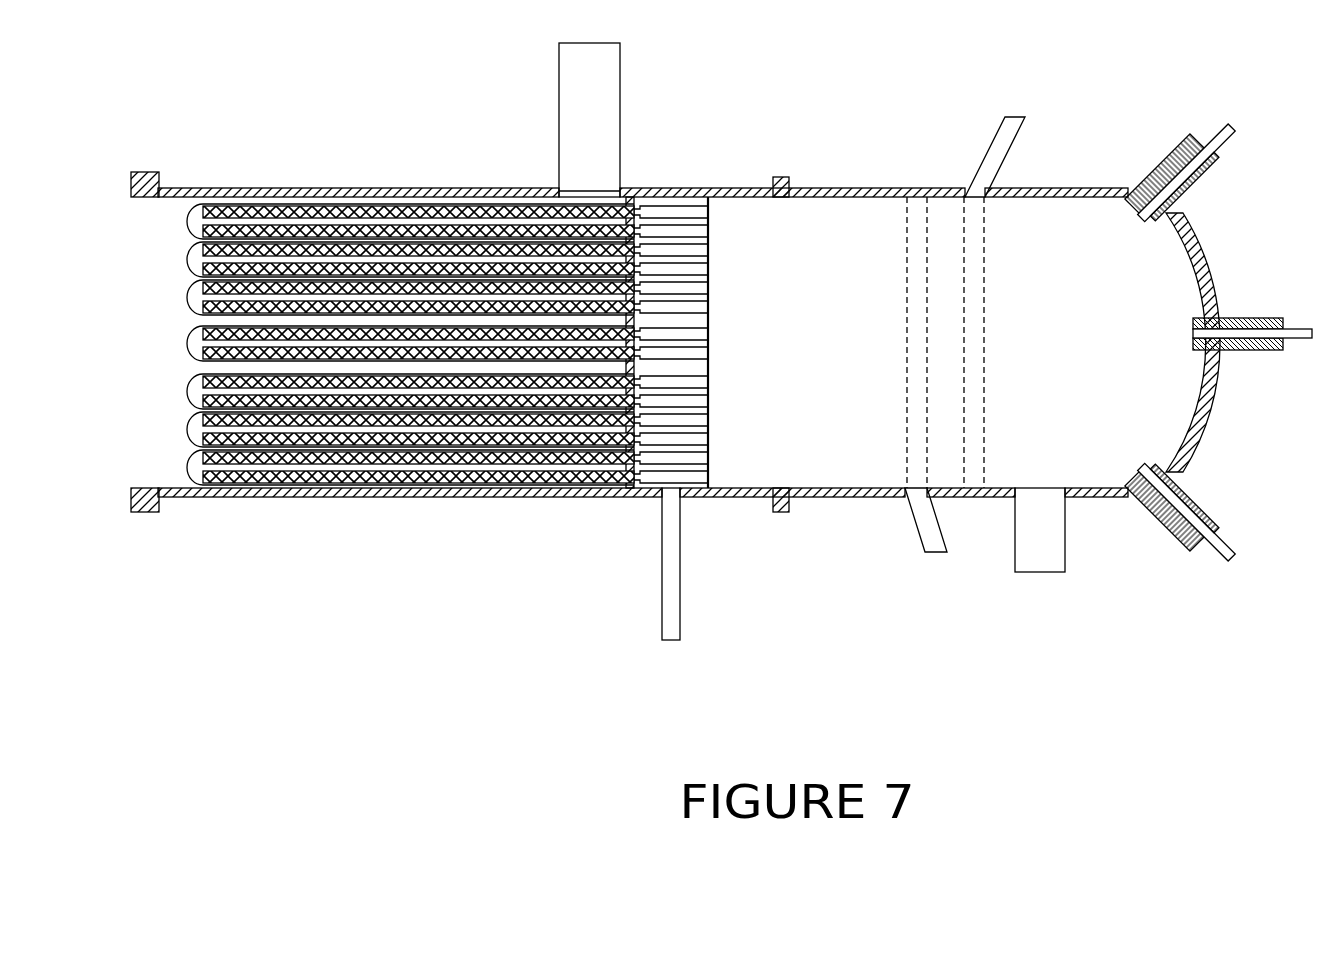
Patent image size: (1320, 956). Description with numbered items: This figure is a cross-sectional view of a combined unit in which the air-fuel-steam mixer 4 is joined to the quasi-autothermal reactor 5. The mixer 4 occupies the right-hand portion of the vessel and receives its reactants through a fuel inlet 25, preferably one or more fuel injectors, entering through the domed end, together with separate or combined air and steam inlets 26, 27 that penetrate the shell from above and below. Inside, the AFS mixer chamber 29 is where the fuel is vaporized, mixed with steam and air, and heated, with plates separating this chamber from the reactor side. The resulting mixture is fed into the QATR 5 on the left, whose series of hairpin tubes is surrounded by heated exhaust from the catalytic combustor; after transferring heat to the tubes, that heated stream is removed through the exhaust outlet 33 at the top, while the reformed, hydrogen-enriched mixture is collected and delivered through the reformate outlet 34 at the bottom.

The air-fuel-steam (AFS) mixer 4 is at (877, 152).
The quasi-autothermal reactor (QATR) 5 is at (414, 153).
The fuel inlet 25 is at (1248, 320).
The air inlet 26 is at (1008, 157).
The steam inlet 27 is at (1065, 532).
The AFS mixer chamber 29 is at (855, 423).
The exhaust outlet 33 is at (620, 124).
The reformate outlet 34 is at (662, 543).